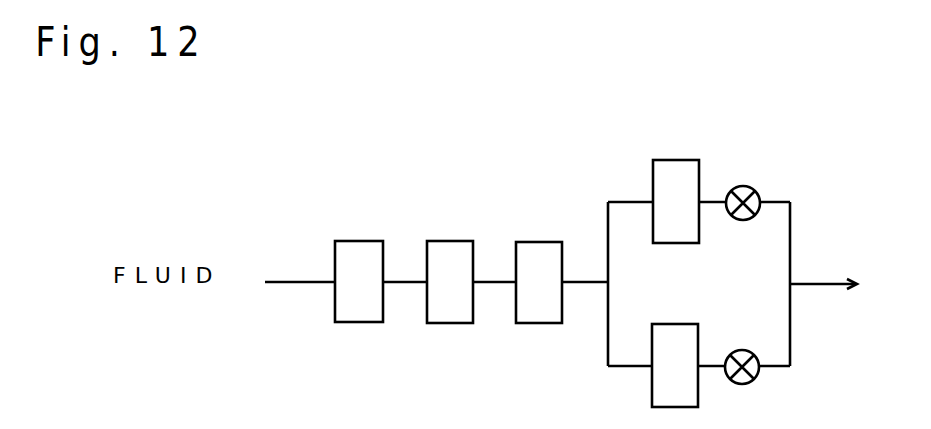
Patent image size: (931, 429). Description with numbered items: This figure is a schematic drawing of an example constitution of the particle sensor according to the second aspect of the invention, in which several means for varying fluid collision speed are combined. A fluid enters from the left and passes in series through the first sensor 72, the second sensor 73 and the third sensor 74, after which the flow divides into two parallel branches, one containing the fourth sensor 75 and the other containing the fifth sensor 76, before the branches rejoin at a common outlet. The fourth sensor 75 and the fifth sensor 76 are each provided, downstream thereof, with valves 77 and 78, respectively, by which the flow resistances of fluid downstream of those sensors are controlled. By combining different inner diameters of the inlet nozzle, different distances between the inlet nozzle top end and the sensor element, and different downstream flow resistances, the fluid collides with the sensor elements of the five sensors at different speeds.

The first sensor 72 is at (359, 241).
The second sensor 73 is at (449, 241).
The third sensor 74 is at (542, 242).
The fourth sensor 75 is at (677, 160).
The fifth sensor 76 is at (676, 324).
The valve 77 is at (743, 186).
The valve 78 is at (743, 350).